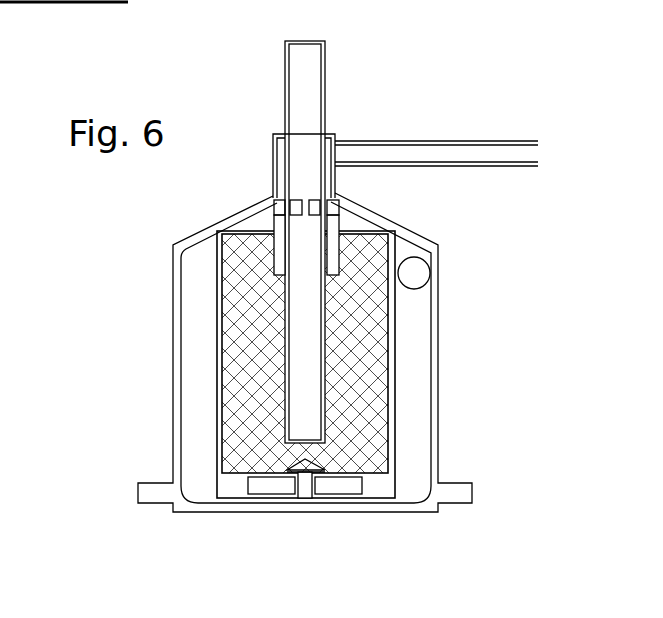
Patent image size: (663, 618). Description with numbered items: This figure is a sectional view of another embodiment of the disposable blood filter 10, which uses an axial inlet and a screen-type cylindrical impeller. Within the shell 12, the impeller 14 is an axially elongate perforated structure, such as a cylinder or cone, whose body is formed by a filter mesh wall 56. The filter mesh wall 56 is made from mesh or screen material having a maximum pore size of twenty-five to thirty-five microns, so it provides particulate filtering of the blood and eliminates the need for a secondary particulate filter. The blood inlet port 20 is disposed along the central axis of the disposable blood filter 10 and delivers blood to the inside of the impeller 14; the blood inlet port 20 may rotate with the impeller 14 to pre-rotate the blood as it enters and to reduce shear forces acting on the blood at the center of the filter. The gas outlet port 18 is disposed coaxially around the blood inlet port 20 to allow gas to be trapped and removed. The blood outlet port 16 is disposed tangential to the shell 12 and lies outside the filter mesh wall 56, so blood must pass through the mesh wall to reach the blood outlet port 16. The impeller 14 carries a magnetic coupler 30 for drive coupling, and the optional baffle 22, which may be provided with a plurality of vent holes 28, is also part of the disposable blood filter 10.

The disposable blood filter 10 is at (175, 226).
The shell 12 is at (438, 320).
The impeller 14 is at (219, 399).
The blood outlet port 16 is at (421, 259).
The gas outlet port 18 is at (463, 147).
The blood inlet port 20 is at (328, 89).
The baffle 22 is at (339, 230).
The vent holes 28 is at (296, 204).
The magnetic coupler 30 is at (269, 486).
The filter mesh wall 56 is at (373, 451).